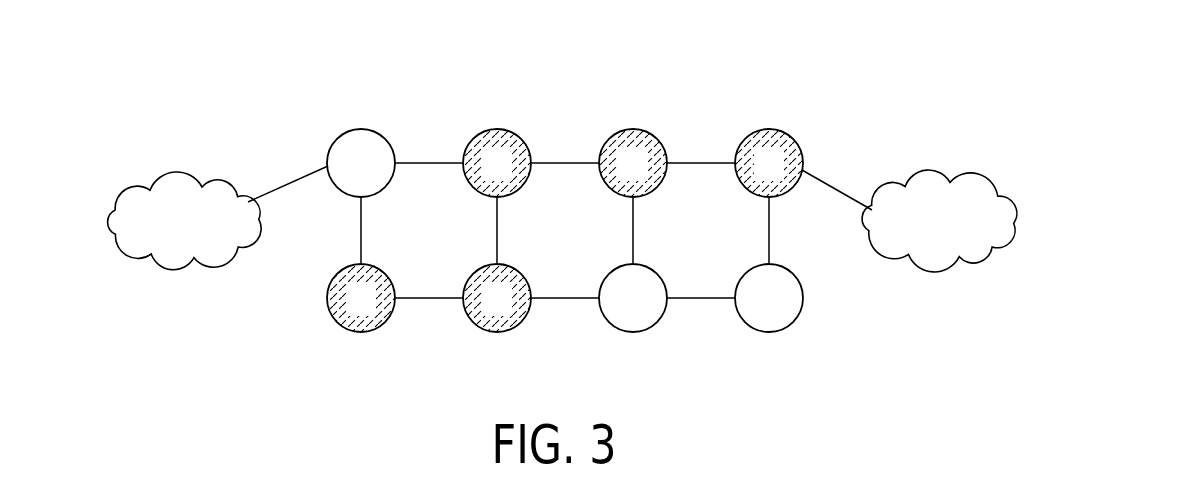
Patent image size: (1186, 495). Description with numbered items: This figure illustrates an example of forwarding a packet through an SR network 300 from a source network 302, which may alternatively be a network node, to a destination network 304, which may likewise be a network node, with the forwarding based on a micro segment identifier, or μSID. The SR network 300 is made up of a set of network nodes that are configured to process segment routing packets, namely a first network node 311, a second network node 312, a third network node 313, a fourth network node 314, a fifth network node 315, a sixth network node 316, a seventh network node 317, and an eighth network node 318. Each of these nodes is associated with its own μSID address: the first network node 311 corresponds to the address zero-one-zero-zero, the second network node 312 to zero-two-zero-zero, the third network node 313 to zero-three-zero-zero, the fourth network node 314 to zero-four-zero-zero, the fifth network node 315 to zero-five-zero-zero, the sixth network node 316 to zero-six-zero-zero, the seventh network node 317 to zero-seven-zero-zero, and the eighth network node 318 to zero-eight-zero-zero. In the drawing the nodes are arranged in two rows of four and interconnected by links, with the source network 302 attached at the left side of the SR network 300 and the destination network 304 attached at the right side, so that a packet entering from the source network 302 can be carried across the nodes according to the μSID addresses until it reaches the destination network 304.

The SR network 300 is at (310, 70).
The source network 302 is at (180, 262).
The destination network 304 is at (935, 262).
The first network node 311 is at (339, 192).
The second network node 312 is at (333, 323).
The third network node 313 is at (474, 323).
The fourth network node 314 is at (472, 190).
The fifth network node 315 is at (612, 191).
The sixth network node 316 is at (607, 323).
The seventh network node 317 is at (742, 323).
The eighth network node 318 is at (747, 193).